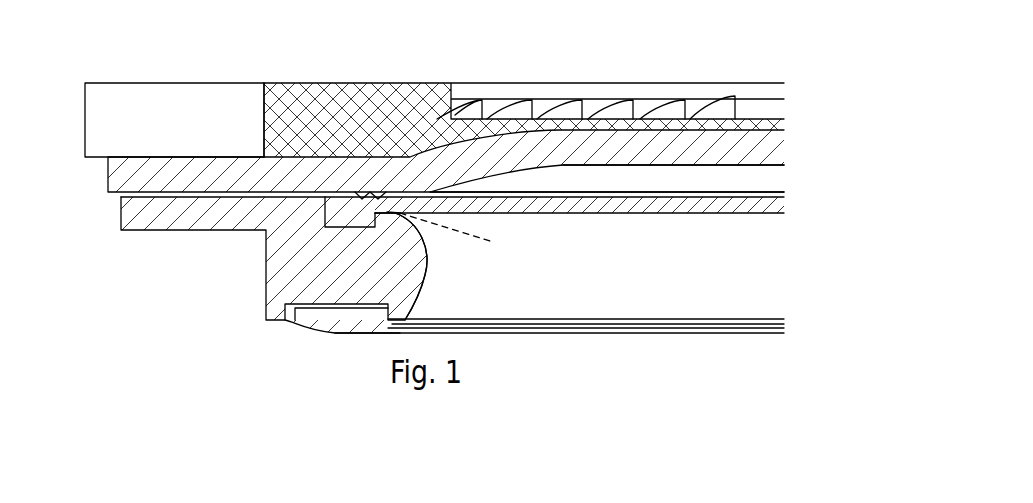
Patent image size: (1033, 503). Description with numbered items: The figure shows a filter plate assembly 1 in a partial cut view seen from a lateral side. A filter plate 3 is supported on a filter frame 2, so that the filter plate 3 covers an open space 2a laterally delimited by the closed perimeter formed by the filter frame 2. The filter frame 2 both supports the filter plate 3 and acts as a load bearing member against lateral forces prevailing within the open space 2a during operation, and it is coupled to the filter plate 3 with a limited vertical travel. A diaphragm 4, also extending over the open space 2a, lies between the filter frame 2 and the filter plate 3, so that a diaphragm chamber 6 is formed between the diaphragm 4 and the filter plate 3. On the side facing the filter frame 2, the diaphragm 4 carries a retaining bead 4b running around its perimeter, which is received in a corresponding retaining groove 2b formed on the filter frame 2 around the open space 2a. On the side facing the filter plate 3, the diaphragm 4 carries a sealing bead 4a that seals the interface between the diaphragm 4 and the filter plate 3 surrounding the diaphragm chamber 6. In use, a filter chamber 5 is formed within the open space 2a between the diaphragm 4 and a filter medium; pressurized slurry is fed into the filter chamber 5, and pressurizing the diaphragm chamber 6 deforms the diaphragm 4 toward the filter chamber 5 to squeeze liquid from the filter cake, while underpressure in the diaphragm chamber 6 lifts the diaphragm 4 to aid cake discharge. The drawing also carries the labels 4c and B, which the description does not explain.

The filter plate assembly 1 is at (433, 251).
The filter frame 2 is at (316, 308).
The open space 2a is at (559, 356).
The retaining groove 2b is at (363, 214).
The filter plate 3 is at (655, 150).
The diaphragm 4 is at (450, 251).
The sealing bead 4a is at (373, 186).
The retaining bead 4b is at (345, 220).
The profile web 4c is at (550, 350).
The filter chamber 5 is at (559, 326).
The diaphragm chamber 6 is at (607, 185).
The detail region B is at (449, 233).